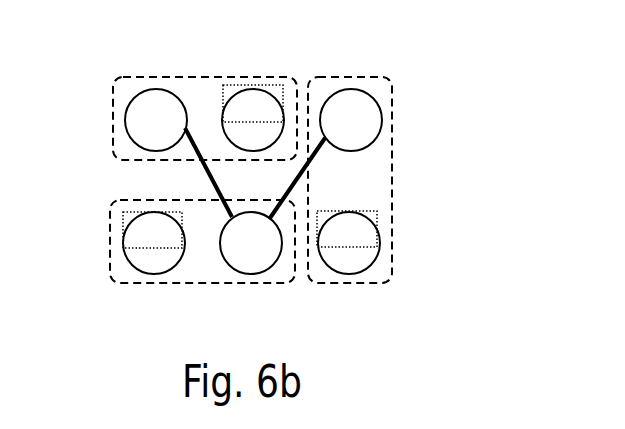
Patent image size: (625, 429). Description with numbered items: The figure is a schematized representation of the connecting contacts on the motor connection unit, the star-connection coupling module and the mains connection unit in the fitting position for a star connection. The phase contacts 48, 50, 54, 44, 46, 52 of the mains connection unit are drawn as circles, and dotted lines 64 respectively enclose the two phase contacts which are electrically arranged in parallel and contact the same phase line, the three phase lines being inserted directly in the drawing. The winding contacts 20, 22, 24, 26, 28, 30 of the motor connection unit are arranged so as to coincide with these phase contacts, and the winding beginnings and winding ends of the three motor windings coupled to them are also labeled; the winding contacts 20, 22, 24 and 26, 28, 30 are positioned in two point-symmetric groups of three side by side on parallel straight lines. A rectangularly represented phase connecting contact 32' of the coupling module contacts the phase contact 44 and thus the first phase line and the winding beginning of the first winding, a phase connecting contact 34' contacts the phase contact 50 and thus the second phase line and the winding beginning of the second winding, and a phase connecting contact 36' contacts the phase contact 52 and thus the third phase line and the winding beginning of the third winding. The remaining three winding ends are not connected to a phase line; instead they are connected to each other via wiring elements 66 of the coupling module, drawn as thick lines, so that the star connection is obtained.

The winding contact 20 is at (144, 86).
The phase contact 48 is at (158, 89).
The winding contact 22 is at (257, 82).
The phase contact 50 is at (253, 88).
The winding contact 24 is at (400, 112).
The phase contact 54 is at (380, 97).
The winding contact 26 is at (106, 265).
The phase contact 44 is at (131, 264).
The winding contact 28 is at (250, 275).
The phase contact 46 is at (263, 274).
The winding contact 30 is at (361, 269).
The phase contact 52 is at (355, 274).
The phase connecting contact 34' is at (233, 74).
The phase connecting contact 32' is at (121, 219).
The phase connecting contact 36' is at (386, 223).
The dotted lines 64 is at (335, 77).
The wiring elements 66 is at (290, 188).